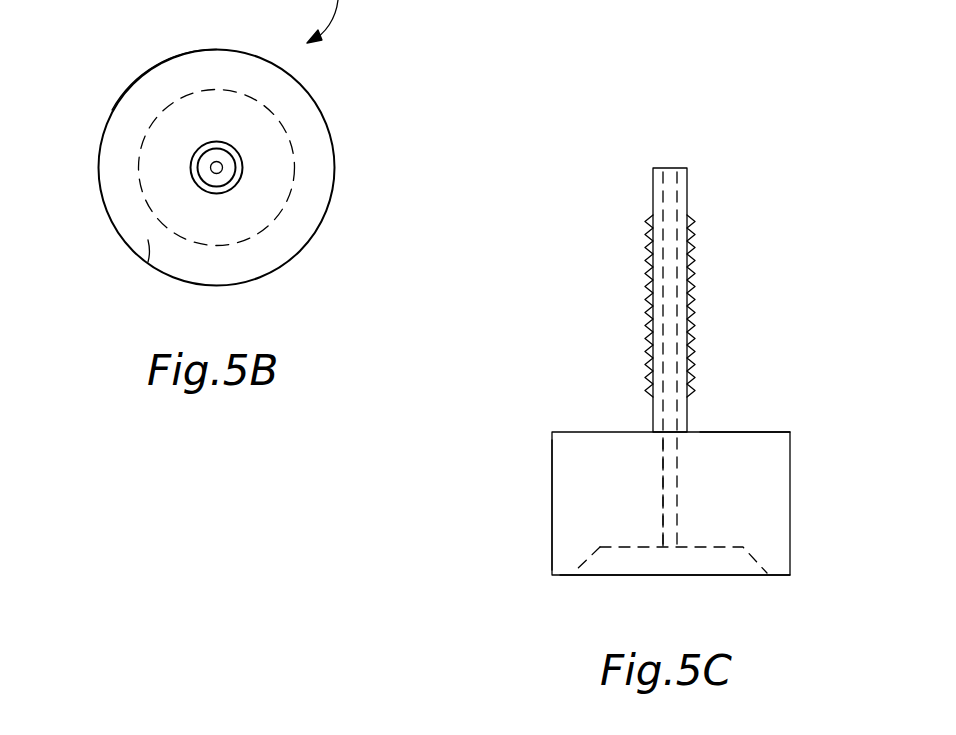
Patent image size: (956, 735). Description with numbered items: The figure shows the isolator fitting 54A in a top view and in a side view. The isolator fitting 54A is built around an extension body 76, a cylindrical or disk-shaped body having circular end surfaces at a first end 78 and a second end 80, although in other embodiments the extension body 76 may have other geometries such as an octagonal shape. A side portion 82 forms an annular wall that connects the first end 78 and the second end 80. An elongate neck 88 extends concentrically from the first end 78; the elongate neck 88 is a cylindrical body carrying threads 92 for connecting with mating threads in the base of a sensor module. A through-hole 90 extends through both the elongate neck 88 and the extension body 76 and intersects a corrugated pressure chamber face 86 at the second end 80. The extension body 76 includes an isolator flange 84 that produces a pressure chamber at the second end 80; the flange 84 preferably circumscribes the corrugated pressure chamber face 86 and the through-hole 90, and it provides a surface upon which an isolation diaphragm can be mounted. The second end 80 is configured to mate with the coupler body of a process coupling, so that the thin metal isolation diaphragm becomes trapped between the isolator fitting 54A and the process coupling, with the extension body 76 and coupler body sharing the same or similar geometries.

In FIG. 5C, the isolator fitting 54A is at (717, 167).
In FIG. 5B, the extension body 76 is at (328, 220).
In FIG. 5C, the extension body 76 is at (793, 480).
In FIG. 5B, the first end 78 is at (148, 240).
In FIG. 5C, the first end 78 is at (737, 432).
In FIG. 5C, the second end 80 is at (778, 577).
In FIG. 5B, the side portion 82 is at (168, 58).
In FIG. 5C, the side portion 82 is at (577, 497).
In FIG. 5B, the isolator flange 84 is at (138, 153).
In FIG. 5C, the isolator flange 84 is at (563, 547).
In FIG. 5C, the corrugated pressure chamber face 86 is at (622, 548).
In FIG. 5B, the elongate neck 88 is at (233, 148).
In FIG. 5C, the elongate neck 88 is at (688, 212).
In FIG. 5B, the through-hole 90 is at (240, 163).
In FIG. 5C, the through-hole 90 is at (662, 473).
In FIG. 5C, the threads 92 is at (647, 290).